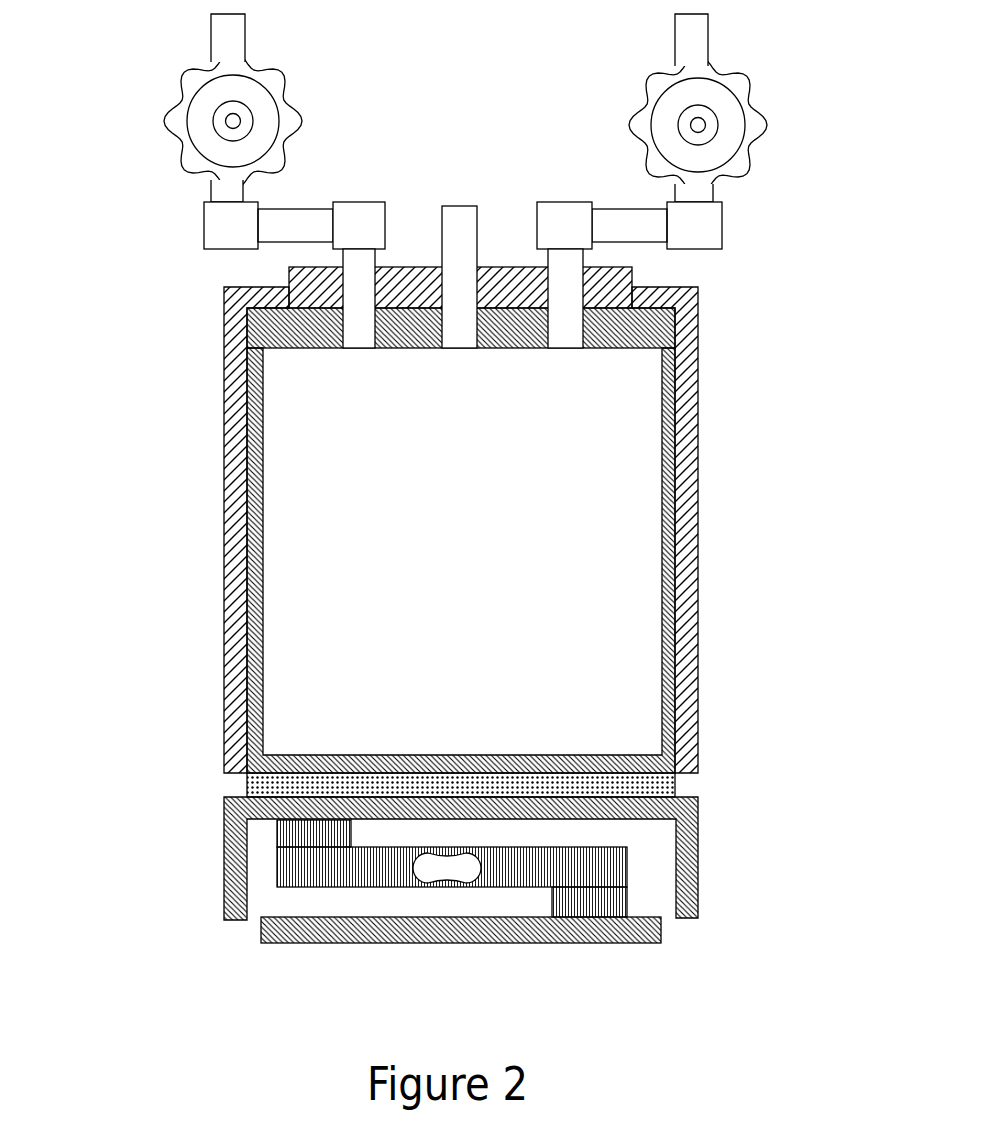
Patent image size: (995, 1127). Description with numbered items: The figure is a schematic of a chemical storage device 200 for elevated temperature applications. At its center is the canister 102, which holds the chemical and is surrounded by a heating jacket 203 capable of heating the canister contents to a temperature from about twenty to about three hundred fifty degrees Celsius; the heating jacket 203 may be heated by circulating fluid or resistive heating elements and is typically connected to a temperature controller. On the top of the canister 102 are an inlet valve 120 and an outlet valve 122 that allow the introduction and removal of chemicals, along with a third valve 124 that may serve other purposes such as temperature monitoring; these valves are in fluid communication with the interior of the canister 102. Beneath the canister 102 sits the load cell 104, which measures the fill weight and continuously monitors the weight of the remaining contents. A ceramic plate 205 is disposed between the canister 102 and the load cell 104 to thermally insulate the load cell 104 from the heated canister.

The chemical storage device 200 is at (452, 478).
The canister 102 is at (258, 535).
The load cell 104 is at (277, 866).
The inlet valve 120 is at (185, 157).
The outlet valve 122 is at (738, 160).
The third valve 124 is at (461, 207).
The heating jacket 203 is at (224, 447).
The ceramic plate 205 is at (247, 789).